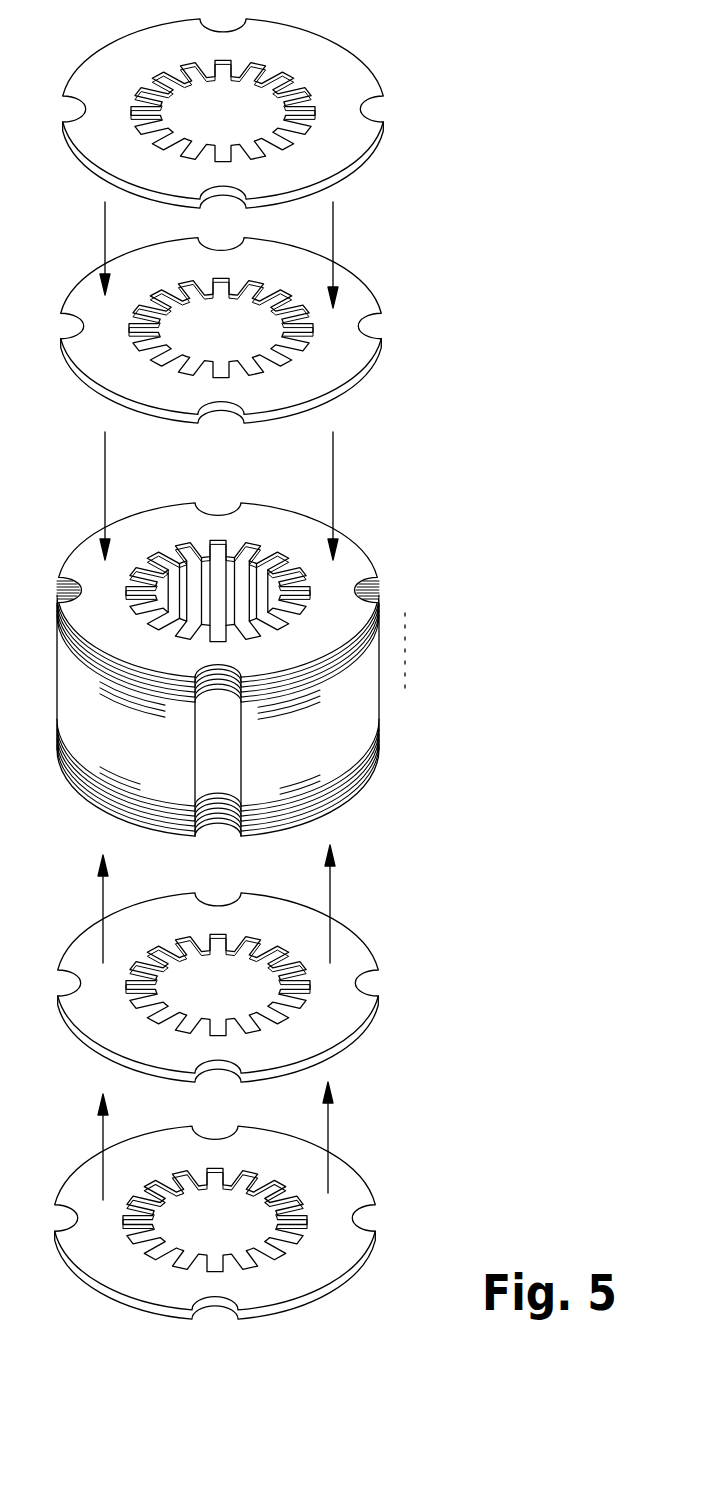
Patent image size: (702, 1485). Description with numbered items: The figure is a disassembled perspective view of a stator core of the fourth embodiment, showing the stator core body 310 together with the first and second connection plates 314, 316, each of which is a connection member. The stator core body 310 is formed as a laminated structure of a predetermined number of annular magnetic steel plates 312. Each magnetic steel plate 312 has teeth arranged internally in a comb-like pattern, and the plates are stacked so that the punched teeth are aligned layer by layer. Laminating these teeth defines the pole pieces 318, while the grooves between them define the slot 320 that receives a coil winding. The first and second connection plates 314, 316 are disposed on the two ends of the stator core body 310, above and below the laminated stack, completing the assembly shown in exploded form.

The stator core body 310 is at (282, 638).
The magnetic steel plate 312 is at (382, 579).
The first connection plate 314 is at (371, 293).
The second connection plate 316 is at (371, 73).
The pole piece 318 is at (204, 543).
The slot 320 is at (192, 540).